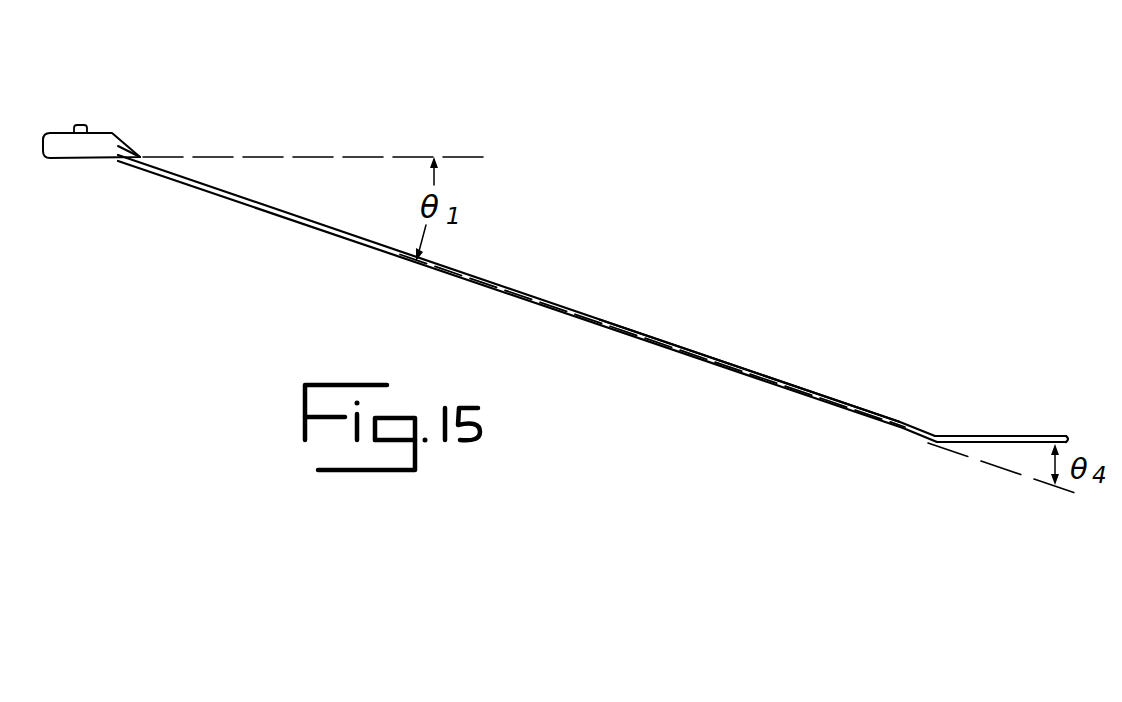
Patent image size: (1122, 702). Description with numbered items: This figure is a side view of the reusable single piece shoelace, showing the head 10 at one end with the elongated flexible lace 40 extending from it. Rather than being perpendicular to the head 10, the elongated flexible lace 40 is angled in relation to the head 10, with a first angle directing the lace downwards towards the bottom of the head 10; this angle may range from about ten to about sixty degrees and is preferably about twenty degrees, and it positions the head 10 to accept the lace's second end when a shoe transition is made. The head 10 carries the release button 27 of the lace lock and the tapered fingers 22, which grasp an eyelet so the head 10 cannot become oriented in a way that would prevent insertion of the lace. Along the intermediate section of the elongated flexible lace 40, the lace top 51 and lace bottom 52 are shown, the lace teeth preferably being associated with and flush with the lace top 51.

The head 10 is at (100, 132).
The release button 27 is at (82, 124).
The tapered fingers 22 is at (135, 152).
The elongated flexible lace 40 is at (352, 247).
The lace top 51 is at (790, 385).
The lace bottom 52 is at (730, 369).